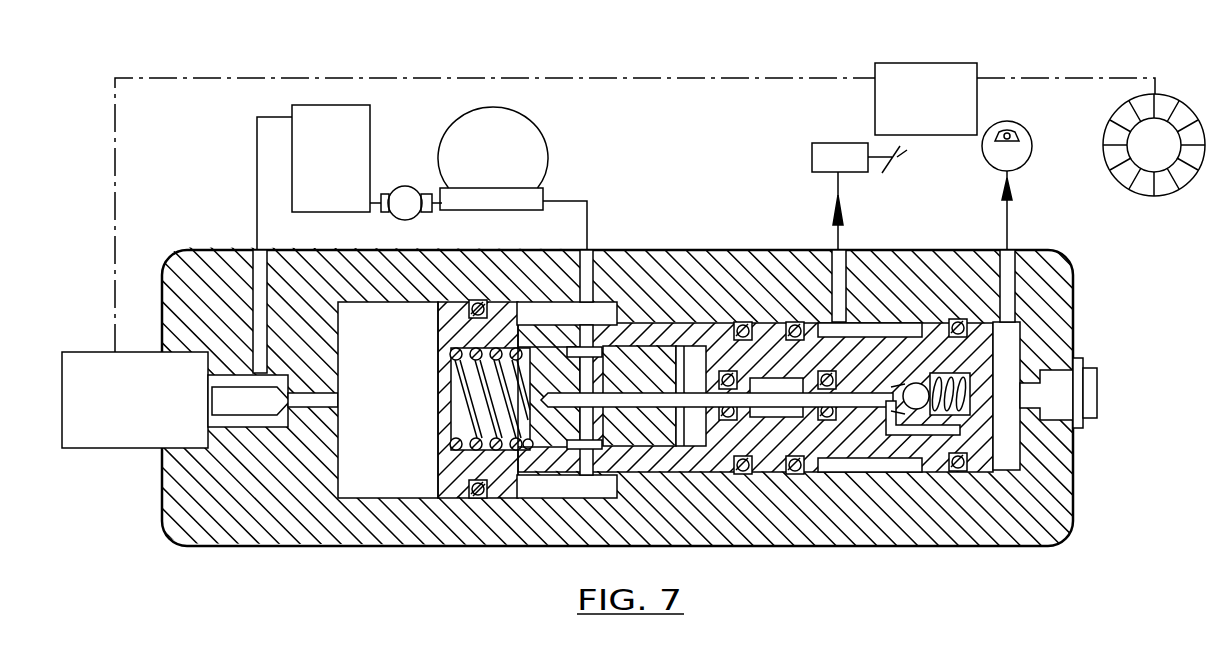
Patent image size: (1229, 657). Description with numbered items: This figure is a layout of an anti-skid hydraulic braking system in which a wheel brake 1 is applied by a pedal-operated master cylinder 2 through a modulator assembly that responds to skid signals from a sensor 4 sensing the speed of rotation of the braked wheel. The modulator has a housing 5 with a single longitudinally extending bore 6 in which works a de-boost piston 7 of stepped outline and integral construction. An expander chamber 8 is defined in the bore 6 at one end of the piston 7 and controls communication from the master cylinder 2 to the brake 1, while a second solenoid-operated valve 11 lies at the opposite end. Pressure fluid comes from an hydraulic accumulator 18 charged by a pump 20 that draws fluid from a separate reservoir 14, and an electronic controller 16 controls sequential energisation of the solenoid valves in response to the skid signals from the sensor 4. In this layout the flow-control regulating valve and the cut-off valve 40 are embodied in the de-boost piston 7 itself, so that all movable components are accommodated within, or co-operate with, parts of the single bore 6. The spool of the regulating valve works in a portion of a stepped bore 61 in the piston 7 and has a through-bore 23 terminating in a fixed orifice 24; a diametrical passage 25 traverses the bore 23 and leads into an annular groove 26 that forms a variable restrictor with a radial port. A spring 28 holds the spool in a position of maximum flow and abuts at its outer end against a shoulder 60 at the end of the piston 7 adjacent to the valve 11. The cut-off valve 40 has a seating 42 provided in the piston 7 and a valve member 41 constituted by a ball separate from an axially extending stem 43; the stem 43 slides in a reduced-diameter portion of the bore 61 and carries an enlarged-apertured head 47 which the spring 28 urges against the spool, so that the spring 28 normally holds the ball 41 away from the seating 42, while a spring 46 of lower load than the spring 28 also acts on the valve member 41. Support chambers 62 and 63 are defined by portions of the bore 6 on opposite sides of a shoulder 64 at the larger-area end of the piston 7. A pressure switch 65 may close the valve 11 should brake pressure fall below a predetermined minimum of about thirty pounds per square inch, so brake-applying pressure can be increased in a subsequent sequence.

The wheel brake 1 is at (1000, 152).
The pedal-operated master cylinder 2 is at (818, 158).
The sensor 4 is at (1172, 170).
The housing 5 is at (602, 480).
The longitudinally extending bore 6 is at (652, 473).
The de-boost piston 7 is at (780, 350).
The expander chamber 8 is at (1008, 345).
The second solenoid-operated valve 11 is at (155, 405).
The reservoir 14 is at (326, 130).
The electronic controller 16 is at (924, 85).
The hydraulic accumulator 18 is at (478, 200).
The pump 20 is at (405, 200).
The through-bore 23 is at (670, 343).
The fixed orifice 24 is at (530, 398).
The diametrical passage 25 is at (588, 430).
The annular groove 26 is at (608, 325).
The spring 28 is at (470, 450).
The cut-off valve 40 is at (919, 400).
The valve member 41 is at (930, 400).
The seating 42 is at (912, 410).
The stem 43 is at (777, 400).
The spring 46 is at (970, 410).
The enlarged-apertured head 47 is at (695, 370).
The shoulder 60 is at (450, 440).
The stepped bore 61 is at (478, 494).
The support chamber 62 is at (548, 300).
The support chamber 63 is at (353, 470).
The shoulder 64 is at (635, 397).
The pressure switch 65 is at (1075, 400).